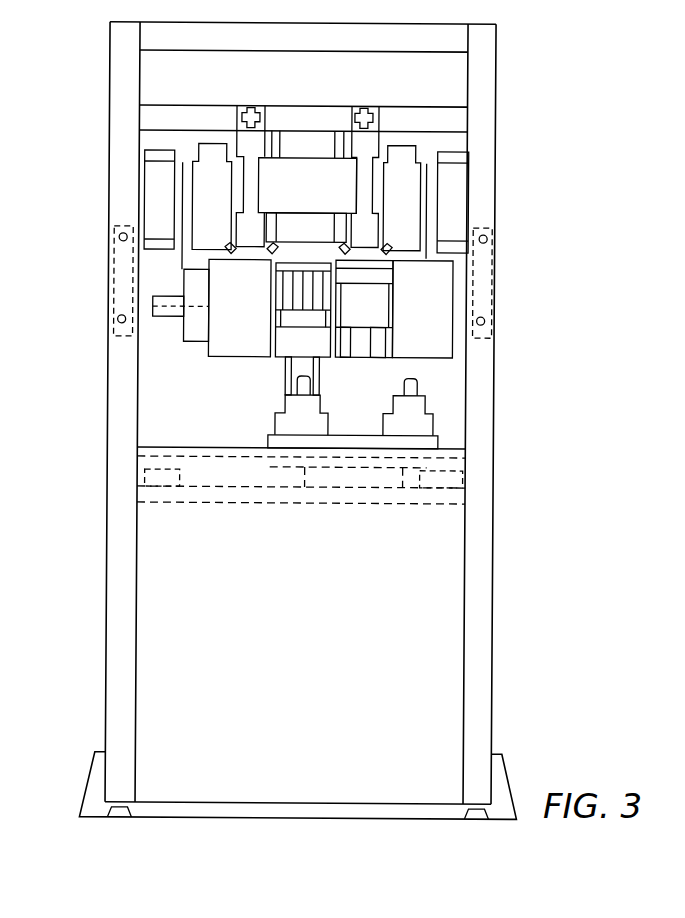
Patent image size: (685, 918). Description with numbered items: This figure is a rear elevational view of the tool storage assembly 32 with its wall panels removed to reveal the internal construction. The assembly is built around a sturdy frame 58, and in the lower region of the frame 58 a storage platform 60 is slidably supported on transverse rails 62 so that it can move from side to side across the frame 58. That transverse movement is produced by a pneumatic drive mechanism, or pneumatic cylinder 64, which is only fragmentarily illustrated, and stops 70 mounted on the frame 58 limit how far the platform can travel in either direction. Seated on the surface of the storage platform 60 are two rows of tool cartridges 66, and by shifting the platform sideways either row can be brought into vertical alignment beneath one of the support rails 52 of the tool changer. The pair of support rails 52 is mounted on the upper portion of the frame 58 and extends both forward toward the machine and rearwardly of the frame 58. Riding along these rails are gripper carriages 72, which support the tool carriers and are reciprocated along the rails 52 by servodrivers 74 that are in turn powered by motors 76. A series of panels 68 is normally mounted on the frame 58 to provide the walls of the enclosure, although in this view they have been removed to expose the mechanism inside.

The tool storage assembly 32 is at (100, 193).
The support rails 52 is at (363, 186).
The frame 58 is at (125, 392).
The storage platform 60 is at (438, 440).
The rails 62 is at (248, 455).
The pneumatic drive mechanism 64 is at (360, 500).
The tool cartridges 66 is at (307, 413).
The panels 68 is at (350, 618).
The stops 70 is at (137, 466).
The gripper carriages 72 is at (253, 324).
The servodrivers 74 is at (403, 203).
The motors 76 is at (450, 221).